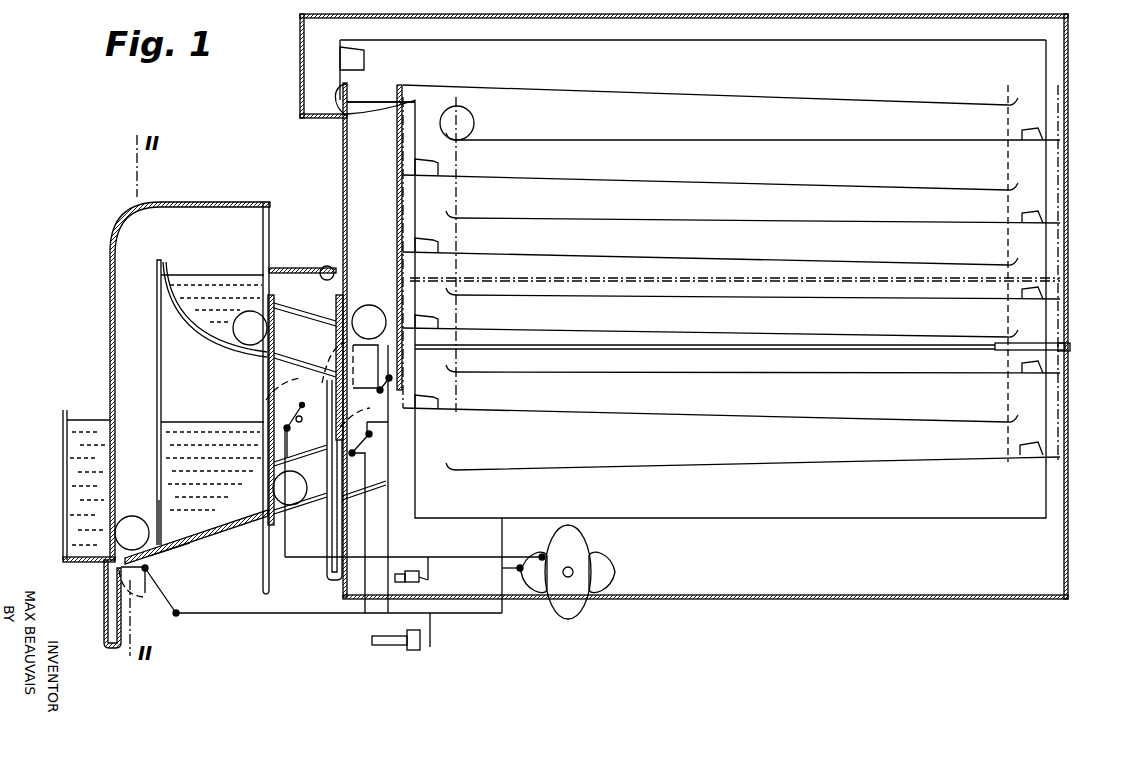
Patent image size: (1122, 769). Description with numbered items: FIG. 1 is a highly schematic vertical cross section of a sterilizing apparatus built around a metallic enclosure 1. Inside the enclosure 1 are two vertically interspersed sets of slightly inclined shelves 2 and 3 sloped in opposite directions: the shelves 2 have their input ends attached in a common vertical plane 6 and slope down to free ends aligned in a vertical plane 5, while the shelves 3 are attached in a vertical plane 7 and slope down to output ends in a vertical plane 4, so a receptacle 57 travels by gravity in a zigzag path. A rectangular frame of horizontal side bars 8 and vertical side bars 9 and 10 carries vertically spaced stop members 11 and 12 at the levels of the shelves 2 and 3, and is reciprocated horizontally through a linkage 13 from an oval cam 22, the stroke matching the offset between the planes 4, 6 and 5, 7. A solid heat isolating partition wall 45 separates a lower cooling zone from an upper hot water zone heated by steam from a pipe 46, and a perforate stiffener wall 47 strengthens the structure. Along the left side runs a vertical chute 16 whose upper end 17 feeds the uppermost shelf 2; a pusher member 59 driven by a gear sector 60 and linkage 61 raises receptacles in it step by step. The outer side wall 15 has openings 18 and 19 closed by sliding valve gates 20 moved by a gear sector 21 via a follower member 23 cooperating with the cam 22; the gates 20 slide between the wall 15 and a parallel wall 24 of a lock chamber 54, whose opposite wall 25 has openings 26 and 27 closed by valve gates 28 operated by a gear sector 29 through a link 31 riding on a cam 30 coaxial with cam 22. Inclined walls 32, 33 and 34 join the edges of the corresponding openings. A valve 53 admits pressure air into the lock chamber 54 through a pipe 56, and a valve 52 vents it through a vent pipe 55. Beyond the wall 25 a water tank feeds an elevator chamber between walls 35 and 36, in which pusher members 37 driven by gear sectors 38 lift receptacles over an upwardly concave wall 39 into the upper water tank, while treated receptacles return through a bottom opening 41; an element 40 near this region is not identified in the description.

The enclosure 1 is at (1071, 173).
The inclined shelves 2 is at (507, 86).
The inclined shelves 3 is at (564, 141).
The vertical plane 4 is at (462, 173).
The vertical plane 5 is at (1004, 153).
The vertical plane 6 is at (400, 271).
The vertical plane 7 is at (1060, 326).
The horizontal side bars 8 is at (679, 42).
The vertical side bar 9 is at (405, 119).
The vertical side bar 10 is at (1062, 192).
The stop members 11 is at (364, 60).
The stop members 12 is at (1036, 134).
The linkage 13 is at (504, 537).
The outer side wall 15 is at (343, 193).
The vertical well or chute 16 is at (363, 144).
The upper end of chute 17 is at (402, 86).
The upper opening 18 is at (338, 342).
The lower opening 19 is at (337, 493).
The sliding valve gates 20 is at (334, 313).
The gear sector 21 is at (389, 426).
The oval cam 22 is at (612, 574).
The follower member 23 is at (512, 571).
The wall 24 is at (328, 266).
The lock chamber wall 25 is at (270, 212).
The upper opening 26 is at (252, 312).
The lower opening 27 is at (262, 484).
The valve gates 28 is at (275, 334).
The gear sector 29 is at (303, 407).
The cam 30 is at (565, 620).
The link 31 is at (443, 556).
The inclined wall 32 is at (335, 383).
The inclined wall 33 is at (320, 496).
The inclined wall 34 is at (305, 456).
The elevator channel wall 35 is at (110, 262).
The elevator channel wall 36 is at (162, 352).
The pusher members 37 is at (117, 547).
The gear sectors 38 is at (138, 594).
The upwardly concave wall 39 is at (188, 311).
The trough bottom 40 is at (255, 346).
The bottom opening 41 is at (158, 517).
The horizontal partition wall 45 is at (640, 351).
The pipe 46 is at (1068, 352).
The perforate stiffener wall 47 is at (605, 279).
The valve 52 is at (428, 648).
The valve 53 is at (424, 580).
The lock chamber 54 is at (262, 379).
The vent pipe 55 is at (371, 640).
The pipe 56 is at (299, 423).
The receptacle 57 is at (477, 123).
The pusher member 59 is at (367, 366).
The gear sector 60 is at (383, 389).
The linkage 61 is at (389, 537).